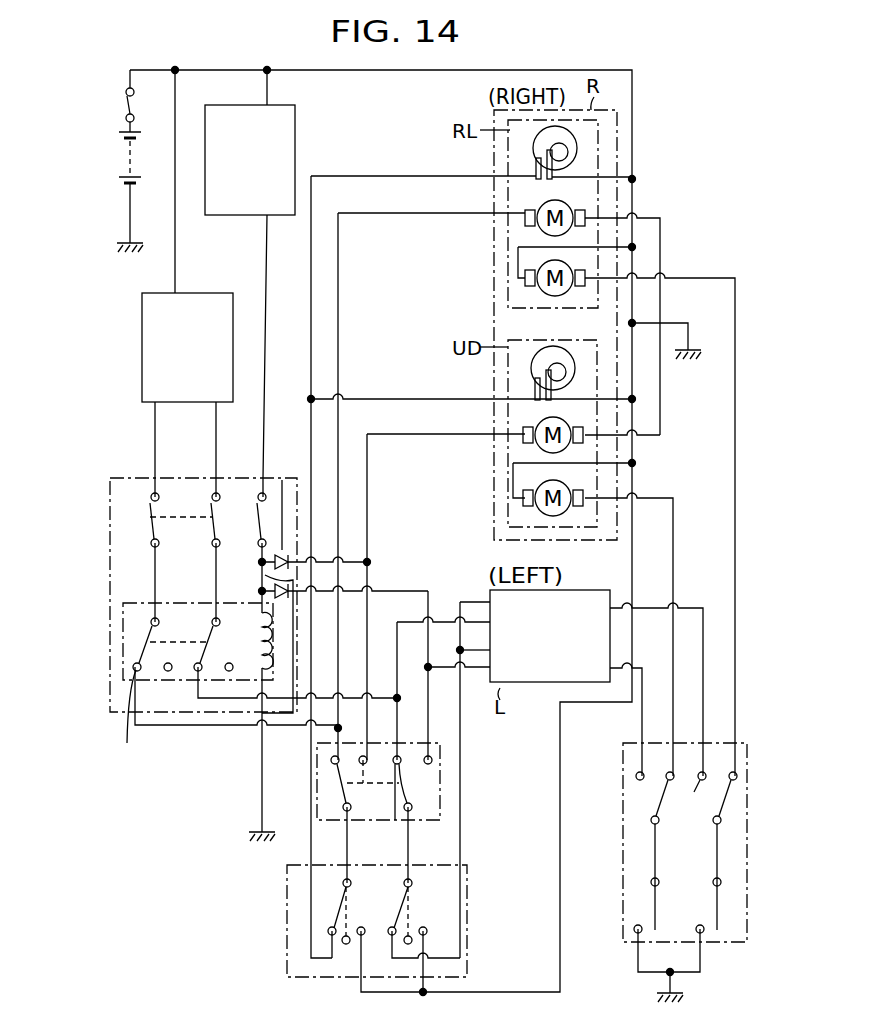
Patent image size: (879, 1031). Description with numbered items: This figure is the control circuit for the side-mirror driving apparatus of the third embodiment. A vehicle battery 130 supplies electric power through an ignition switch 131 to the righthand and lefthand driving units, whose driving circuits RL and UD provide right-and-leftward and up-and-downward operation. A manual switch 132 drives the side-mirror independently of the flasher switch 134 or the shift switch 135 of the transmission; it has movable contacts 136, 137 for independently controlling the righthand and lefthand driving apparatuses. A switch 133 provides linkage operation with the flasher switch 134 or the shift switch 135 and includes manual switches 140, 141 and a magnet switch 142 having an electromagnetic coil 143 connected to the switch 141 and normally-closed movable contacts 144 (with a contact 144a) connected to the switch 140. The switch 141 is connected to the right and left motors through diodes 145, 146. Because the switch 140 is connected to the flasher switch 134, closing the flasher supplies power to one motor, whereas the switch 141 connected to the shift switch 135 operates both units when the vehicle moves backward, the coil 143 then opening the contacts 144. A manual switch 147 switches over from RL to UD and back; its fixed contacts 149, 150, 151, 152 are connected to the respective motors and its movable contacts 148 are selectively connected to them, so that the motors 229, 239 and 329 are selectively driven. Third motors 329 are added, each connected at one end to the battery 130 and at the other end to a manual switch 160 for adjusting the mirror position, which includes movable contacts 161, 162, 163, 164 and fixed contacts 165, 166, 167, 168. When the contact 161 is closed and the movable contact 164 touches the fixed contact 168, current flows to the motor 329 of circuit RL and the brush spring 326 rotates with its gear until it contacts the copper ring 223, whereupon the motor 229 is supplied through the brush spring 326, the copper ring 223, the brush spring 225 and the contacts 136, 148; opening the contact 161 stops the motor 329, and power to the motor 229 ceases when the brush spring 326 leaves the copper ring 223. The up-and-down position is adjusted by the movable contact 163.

The battery 130 is at (128, 158).
The ignition switch 131 is at (128, 103).
The manual switch 132 is at (467, 952).
The switch 133 is at (145, 478).
The flasher switch 134 is at (210, 292).
The shift switch 135 is at (296, 114).
The movable contact 136 is at (340, 910).
The movable contact 137 is at (397, 915).
The manual switch 140 is at (150, 520).
The manual switch 141 is at (258, 527).
The magnet switch 142 is at (190, 602).
The electromagnetic coil 143 is at (252, 638).
The normally-closed movable contacts 144 is at (148, 640).
The relay switch contact 144a is at (128, 718).
The diode 145 is at (282, 478).
The diode 146 is at (254, 561).
The manual switch 147 is at (440, 812).
The movable contacts 148 is at (410, 790).
The fixed contact 149 is at (330, 762).
The fixed contact 150 is at (364, 790).
The fixed contact 151 is at (395, 822).
The fixed contact 152 is at (432, 765).
The manual switch 160 is at (725, 945).
The movable contact 161 is at (714, 892).
The movable contact 162 is at (654, 905).
The movable contact 163 is at (654, 806).
The movable contact 164 is at (722, 798).
The fixed contact 165 is at (637, 773).
The fixed contact 166 is at (666, 778).
The fixed contact 167 is at (688, 797).
The fixed contact 168 is at (734, 771).
The copper ring 223 is at (576, 143).
The brush spring 225 is at (536, 172).
The motor 229 is at (577, 210).
The mirror drive motor 239 is at (578, 424).
The brush spring 326 is at (557, 176).
The motor 329 is at (537, 262).